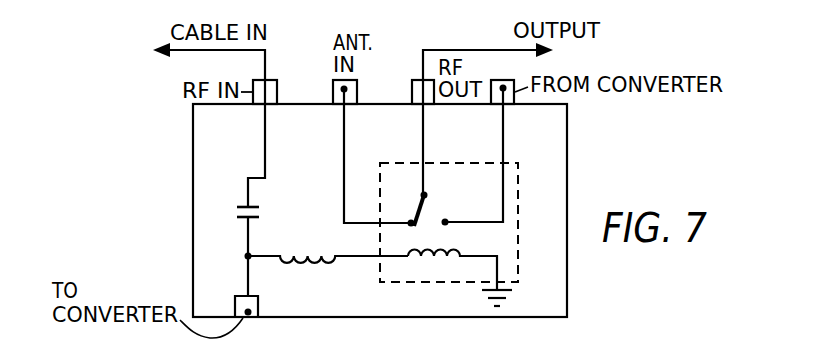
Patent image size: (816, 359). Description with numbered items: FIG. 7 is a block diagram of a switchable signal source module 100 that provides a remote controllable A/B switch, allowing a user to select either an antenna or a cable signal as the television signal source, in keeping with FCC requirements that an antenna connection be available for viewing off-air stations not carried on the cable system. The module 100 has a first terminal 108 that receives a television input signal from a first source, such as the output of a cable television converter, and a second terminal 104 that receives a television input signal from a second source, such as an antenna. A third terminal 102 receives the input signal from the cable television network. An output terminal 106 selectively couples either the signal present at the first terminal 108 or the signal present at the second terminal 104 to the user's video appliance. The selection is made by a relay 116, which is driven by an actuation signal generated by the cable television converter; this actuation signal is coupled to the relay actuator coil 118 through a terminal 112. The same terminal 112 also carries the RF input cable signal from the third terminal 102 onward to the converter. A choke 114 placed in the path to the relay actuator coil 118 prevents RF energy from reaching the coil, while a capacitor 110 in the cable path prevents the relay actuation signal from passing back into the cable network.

The module 100 is at (571, 186).
The third terminal 102 is at (279, 86).
The second terminal 104 is at (358, 92).
The output terminal 106 is at (413, 80).
The first terminal 108 is at (514, 81).
The capacitor 110 is at (246, 204).
The terminal 112 is at (252, 317).
The choke 114 is at (303, 254).
The relay 116 is at (520, 253).
The relay actuator coil 118 is at (457, 250).